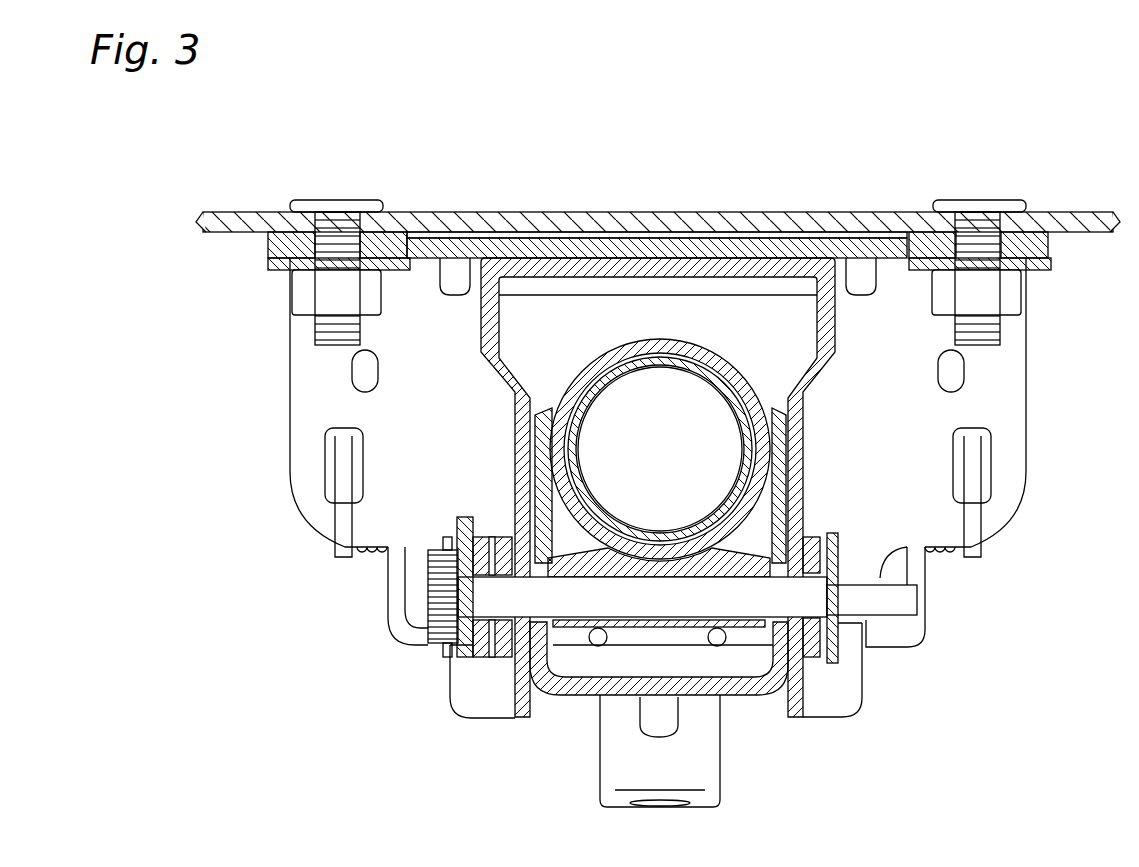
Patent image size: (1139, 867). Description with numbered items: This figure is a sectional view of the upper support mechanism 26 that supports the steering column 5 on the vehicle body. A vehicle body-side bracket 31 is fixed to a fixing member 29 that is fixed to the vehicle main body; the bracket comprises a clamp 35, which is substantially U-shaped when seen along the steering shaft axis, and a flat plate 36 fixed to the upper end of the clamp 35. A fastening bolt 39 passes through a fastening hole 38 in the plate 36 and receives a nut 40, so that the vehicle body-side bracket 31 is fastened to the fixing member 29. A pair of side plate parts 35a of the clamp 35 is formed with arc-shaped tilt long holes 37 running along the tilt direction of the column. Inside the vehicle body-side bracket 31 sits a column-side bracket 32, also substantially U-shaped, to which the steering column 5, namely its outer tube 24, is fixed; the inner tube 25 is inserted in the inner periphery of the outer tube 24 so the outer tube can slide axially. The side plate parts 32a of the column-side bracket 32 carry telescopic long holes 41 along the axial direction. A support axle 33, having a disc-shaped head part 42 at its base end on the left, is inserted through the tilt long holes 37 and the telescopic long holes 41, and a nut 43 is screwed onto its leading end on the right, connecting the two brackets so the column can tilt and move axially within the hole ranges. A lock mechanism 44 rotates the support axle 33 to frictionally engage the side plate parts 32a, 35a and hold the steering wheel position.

The upper support mechanism 26 is at (1009, 113).
The fixing member 29 is at (1090, 213).
The vehicle body-side bracket 31 is at (738, 180).
The clamp 35 is at (640, 262).
The plate 36 is at (710, 240).
The fastening hole 38 is at (272, 250).
The fastening bolt 39 is at (343, 200).
The nut 40 is at (300, 315).
The side plate parts 35a is at (515, 449).
The side plate parts 32a is at (550, 412).
The steering column 5 is at (737, 352).
The outer tube 24 is at (682, 350).
The inner tube 25 is at (627, 352).
The telescopic long holes 41 is at (530, 586).
The column-side bracket 32 is at (570, 690).
The tilt long holes 37 is at (507, 533).
The support axle 33 is at (443, 550).
The head part 42 is at (443, 657).
The nut 43 is at (848, 640).
The lock mechanism 44 is at (438, 715).